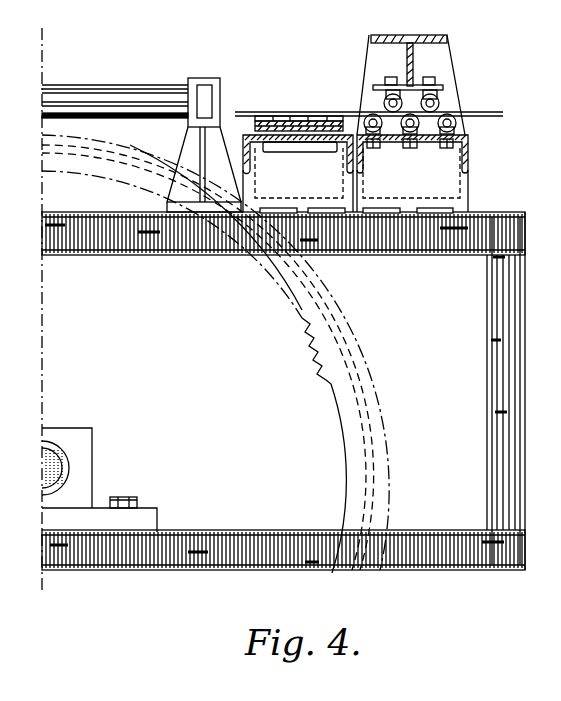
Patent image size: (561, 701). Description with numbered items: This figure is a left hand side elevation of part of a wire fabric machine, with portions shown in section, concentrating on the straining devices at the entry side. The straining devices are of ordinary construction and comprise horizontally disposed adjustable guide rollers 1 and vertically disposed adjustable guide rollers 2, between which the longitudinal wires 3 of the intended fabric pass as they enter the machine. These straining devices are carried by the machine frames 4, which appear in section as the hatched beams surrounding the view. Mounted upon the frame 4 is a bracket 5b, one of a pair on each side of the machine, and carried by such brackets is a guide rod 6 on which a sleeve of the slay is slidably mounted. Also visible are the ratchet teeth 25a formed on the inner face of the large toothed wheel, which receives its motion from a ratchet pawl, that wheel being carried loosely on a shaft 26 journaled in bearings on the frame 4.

The horizontally disposed adjustable guide rollers 1 is at (369, 108).
The vertically disposed adjustable guide rollers 2 is at (301, 109).
The longitudinal wires 3 is at (243, 110).
The machine frames 4 is at (212, 258).
The bracket 5b is at (128, 208).
The guide rod 6 is at (131, 91).
The ratchet teeth 25a is at (314, 343).
The shaft 26 is at (68, 476).